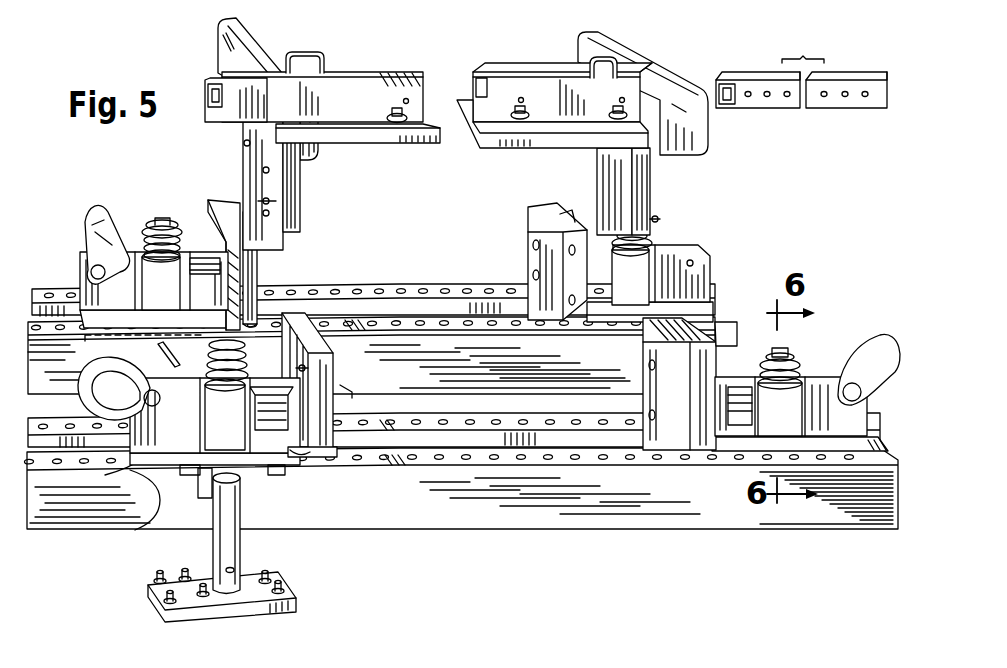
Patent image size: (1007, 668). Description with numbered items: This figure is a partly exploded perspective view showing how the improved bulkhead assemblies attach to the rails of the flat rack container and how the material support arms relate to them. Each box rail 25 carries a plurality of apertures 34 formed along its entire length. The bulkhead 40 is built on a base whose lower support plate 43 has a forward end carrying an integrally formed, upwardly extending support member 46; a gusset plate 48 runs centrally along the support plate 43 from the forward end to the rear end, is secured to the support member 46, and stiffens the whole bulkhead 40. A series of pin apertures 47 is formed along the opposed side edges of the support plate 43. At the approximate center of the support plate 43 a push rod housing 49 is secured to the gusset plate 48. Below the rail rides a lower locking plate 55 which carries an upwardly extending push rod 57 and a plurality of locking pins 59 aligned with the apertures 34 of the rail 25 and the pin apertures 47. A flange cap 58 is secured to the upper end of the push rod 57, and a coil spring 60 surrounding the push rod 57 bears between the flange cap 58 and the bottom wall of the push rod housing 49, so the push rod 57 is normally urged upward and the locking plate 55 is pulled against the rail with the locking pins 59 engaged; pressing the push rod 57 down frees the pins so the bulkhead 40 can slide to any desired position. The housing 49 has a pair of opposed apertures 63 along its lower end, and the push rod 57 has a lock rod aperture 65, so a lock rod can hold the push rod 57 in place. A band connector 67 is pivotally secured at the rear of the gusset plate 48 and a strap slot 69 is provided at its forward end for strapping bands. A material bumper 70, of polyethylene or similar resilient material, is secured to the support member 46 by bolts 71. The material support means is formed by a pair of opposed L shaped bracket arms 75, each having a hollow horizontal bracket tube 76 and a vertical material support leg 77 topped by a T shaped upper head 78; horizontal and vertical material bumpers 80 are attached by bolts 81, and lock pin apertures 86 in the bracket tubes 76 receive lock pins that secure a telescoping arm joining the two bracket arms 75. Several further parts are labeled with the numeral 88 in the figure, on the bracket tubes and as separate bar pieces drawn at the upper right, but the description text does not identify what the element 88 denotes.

The box rail 25 is at (478, 292).
The apertures 34 is at (446, 289).
The bulkhead 40 is at (124, 221).
The lower support plate 43 is at (87, 336).
The support member 46 is at (242, 278).
The pin apertures 47 is at (183, 476).
The gusset plate 48 is at (745, 258).
The push rod housing 49 is at (472, 347).
The lower locking plate 55 is at (300, 605).
The push rod 57 is at (242, 546).
The flange cap 58 is at (150, 216).
The locking pins 59 is at (157, 576).
The coil spring 60 is at (188, 235).
The opposed apertures 63 is at (205, 500).
The lock rod aperture 65 is at (226, 571).
The band connector 67 is at (105, 235).
The strap slot 69 is at (206, 214).
The material bumper 70 is at (260, 257).
The bolts 71 is at (305, 368).
The L shaped bracket arm 75 is at (363, 64).
The bracket tube 76 is at (398, 70).
The material support leg 77 is at (244, 152).
The T shaped upper head 78 is at (214, 48).
The material bumper 80 is at (300, 186).
The bolts 81 is at (270, 201).
The lock pin apertures 86 is at (409, 99).
The bar 88 is at (232, 30).